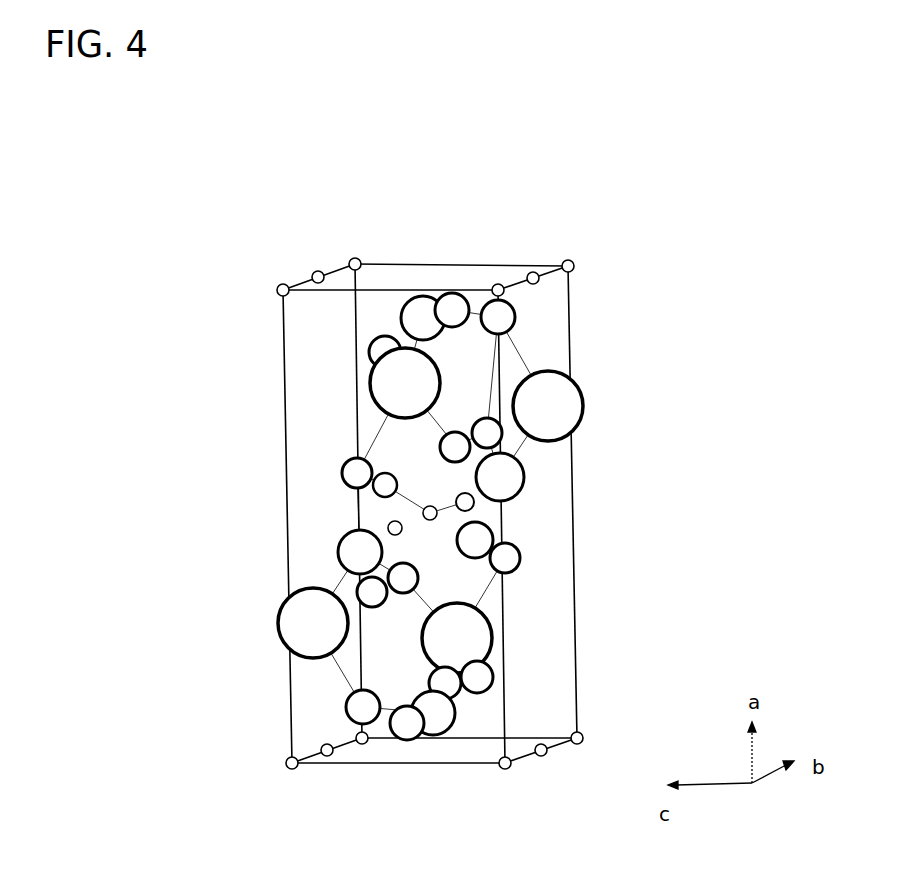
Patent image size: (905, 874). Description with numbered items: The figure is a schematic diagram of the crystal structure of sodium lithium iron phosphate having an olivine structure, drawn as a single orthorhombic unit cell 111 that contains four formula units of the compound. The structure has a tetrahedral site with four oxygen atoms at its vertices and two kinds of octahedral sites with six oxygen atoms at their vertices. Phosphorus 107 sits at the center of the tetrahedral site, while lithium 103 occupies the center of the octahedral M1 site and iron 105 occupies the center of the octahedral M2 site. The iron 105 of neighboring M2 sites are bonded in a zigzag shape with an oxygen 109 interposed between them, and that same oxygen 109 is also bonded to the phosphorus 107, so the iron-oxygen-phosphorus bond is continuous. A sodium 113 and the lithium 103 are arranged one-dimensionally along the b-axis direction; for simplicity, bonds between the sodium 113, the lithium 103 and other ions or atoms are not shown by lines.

The lithium 103 is at (424, 510).
The iron 105 is at (563, 405).
The phosphorus 107 is at (517, 473).
The oxygen 109 is at (510, 548).
The unit cell 111 is at (425, 267).
The sodium 113 is at (388, 527).